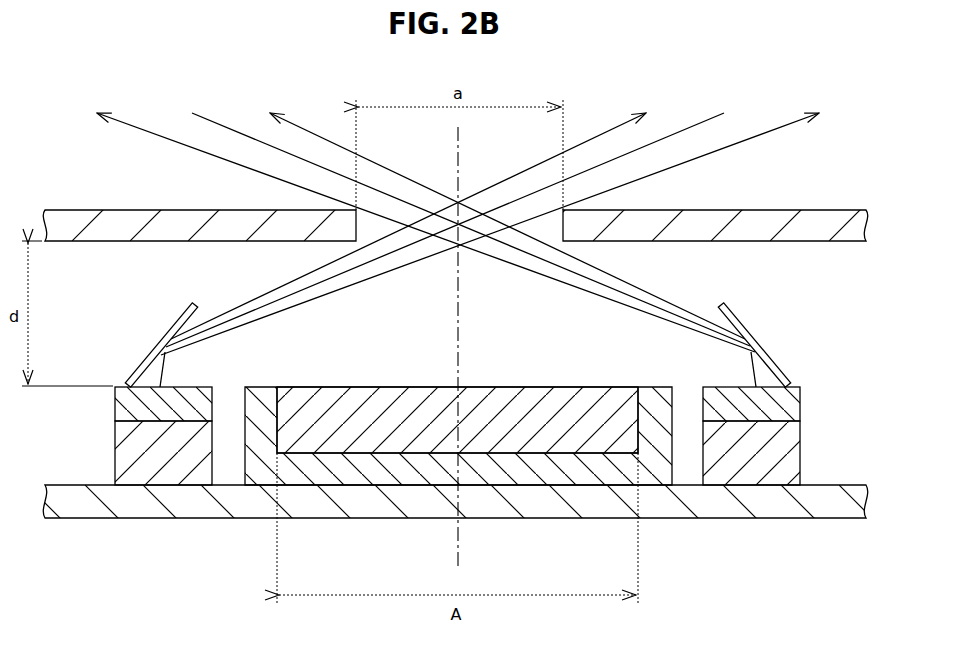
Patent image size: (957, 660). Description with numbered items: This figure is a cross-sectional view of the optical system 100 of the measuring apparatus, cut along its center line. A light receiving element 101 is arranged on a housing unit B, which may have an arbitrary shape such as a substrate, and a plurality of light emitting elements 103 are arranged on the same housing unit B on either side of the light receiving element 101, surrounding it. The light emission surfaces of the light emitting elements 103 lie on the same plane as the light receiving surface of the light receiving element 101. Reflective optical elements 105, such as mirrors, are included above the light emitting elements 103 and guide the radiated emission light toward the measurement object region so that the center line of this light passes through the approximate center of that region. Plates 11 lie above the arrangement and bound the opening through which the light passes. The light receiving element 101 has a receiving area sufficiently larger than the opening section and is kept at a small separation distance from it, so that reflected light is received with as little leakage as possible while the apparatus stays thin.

The light shielding plate 11 is at (152, 210).
The optical system 100 is at (803, 303).
The light receiving element 101 is at (542, 386).
The light emitting element 103 is at (118, 385).
The reflective optical element 105 is at (154, 345).
The housing unit B is at (828, 485).